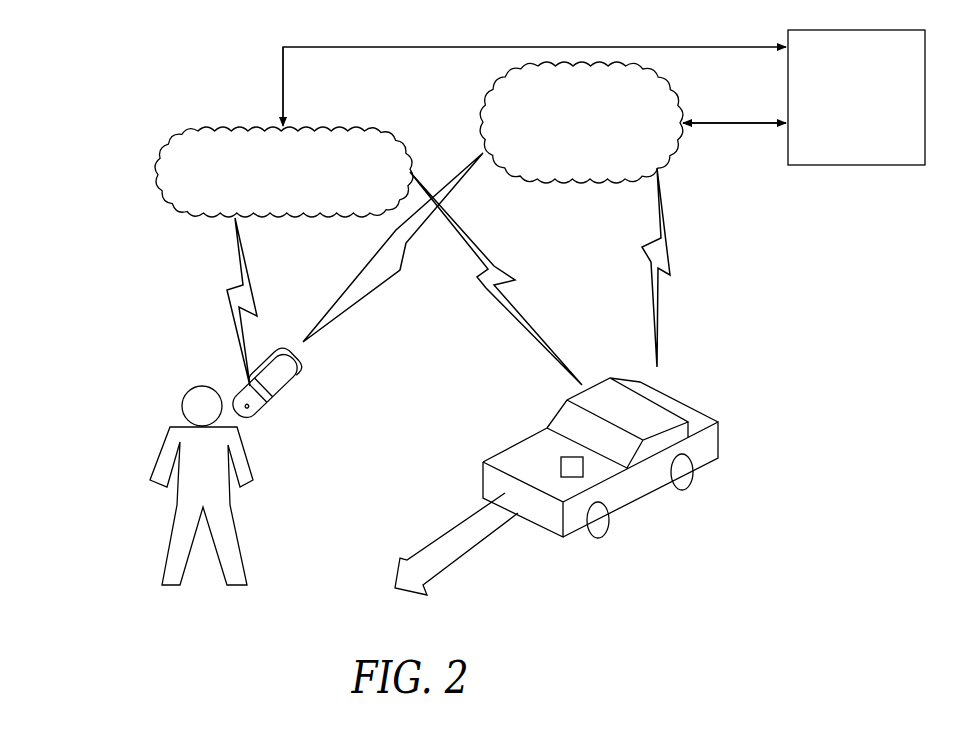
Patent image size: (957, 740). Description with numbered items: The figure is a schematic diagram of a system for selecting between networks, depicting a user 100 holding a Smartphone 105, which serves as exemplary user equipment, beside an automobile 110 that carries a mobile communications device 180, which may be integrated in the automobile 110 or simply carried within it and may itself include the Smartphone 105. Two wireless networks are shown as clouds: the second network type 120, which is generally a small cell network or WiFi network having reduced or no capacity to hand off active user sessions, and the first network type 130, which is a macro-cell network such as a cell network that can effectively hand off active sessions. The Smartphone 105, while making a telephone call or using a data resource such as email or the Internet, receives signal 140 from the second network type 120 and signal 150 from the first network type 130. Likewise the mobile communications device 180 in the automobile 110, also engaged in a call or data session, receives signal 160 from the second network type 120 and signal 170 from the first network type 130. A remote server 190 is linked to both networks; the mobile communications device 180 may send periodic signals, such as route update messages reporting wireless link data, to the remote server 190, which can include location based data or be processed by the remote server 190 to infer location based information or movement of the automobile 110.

The user 100 is at (130, 525).
The Smartphone 105 is at (275, 430).
The automobile 110 is at (728, 377).
The second network type 120 is at (284, 172).
The first network type 130 is at (581, 122).
The signal 140 is at (213, 303).
The signal 150 is at (348, 322).
The signal 160 is at (515, 318).
The signal 170 is at (713, 253).
The mobile communications device 180 is at (583, 474).
The remote server 190 is at (856, 97).